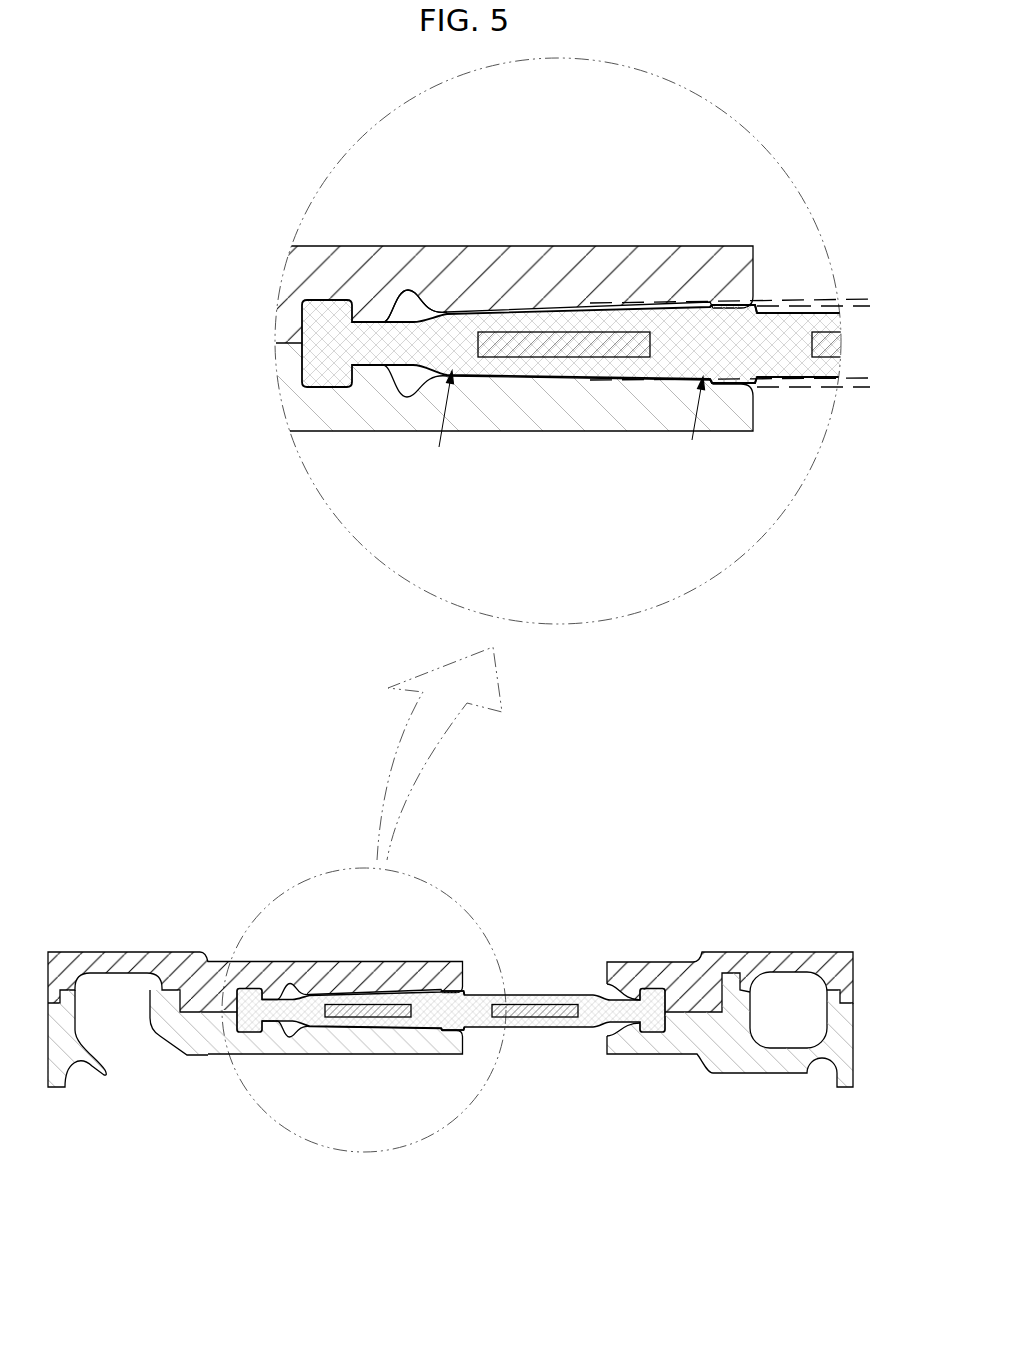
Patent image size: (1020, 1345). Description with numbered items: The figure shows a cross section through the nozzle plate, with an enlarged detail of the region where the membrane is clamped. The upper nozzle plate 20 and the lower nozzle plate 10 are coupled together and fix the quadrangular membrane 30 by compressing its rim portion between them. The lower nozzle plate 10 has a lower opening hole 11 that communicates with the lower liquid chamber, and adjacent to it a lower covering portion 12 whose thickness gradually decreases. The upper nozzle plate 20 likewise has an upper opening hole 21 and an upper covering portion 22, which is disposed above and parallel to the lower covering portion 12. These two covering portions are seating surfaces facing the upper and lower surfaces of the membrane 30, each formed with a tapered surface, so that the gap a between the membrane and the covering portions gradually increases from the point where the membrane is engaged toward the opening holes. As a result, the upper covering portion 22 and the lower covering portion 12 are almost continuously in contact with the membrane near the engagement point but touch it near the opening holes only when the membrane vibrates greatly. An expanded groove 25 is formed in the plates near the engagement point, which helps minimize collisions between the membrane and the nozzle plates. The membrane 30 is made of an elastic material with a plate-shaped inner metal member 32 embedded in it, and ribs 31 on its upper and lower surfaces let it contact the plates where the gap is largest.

The lower nozzle plate 10 is at (190, 1054).
The lower opening hole 11 is at (532, 1054).
The lower covering portion 12 is at (552, 412).
The upper nozzle plate 20 is at (125, 952).
The upper opening hole 21 is at (530, 971).
The upper covering portion 22 is at (540, 275).
The groove 25 is at (407, 302).
The membrane 30 is at (767, 330).
The rib 31 is at (442, 1033).
The inner metal member 32 is at (551, 1010).
The gap a is at (739, 342).